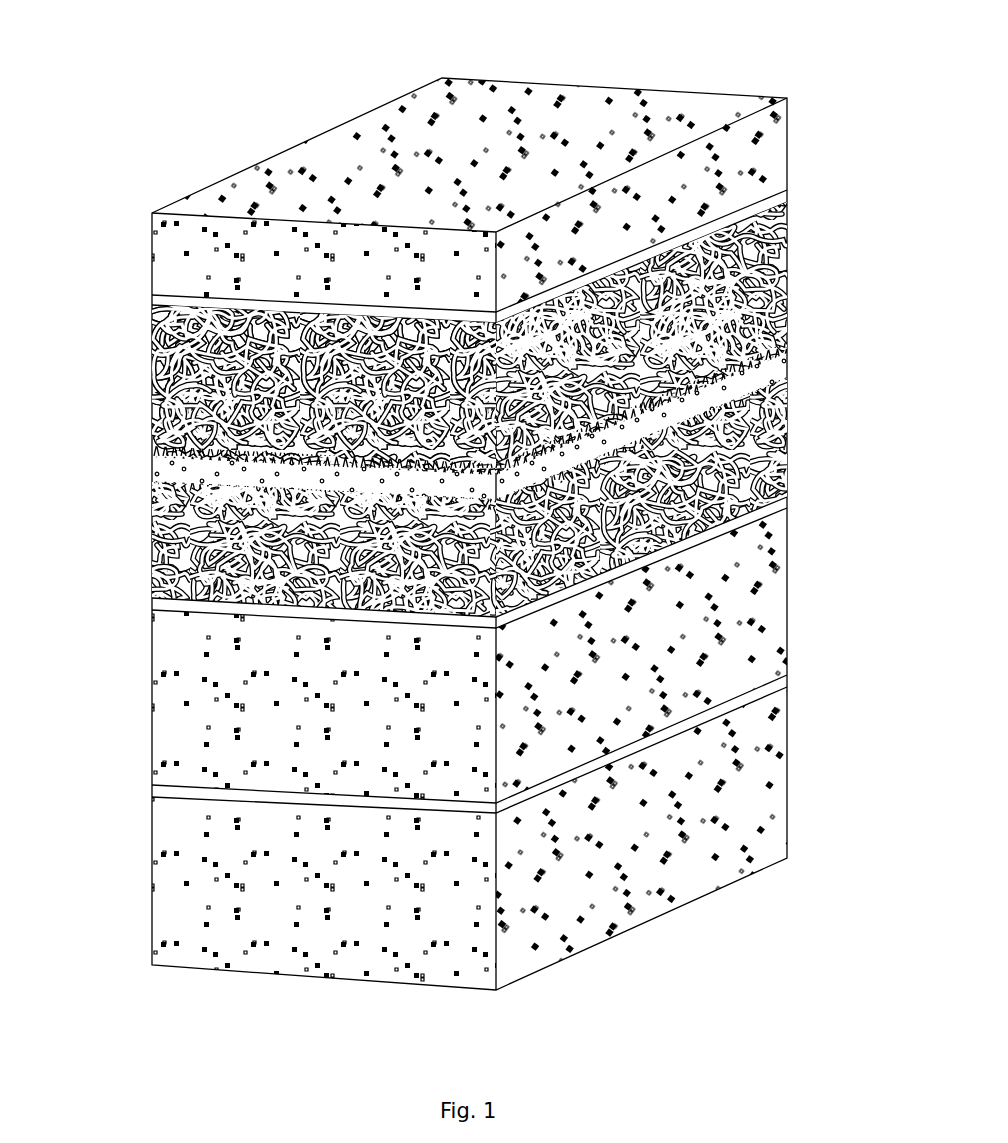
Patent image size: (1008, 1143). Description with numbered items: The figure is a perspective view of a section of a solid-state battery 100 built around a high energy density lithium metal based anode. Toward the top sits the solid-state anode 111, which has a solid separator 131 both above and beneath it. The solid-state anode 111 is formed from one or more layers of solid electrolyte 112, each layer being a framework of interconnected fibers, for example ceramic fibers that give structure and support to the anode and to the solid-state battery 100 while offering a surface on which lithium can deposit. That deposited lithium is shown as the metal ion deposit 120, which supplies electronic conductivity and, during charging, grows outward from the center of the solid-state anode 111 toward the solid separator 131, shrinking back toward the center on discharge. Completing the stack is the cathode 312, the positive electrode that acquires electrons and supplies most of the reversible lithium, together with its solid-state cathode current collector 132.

The solid-state battery 100 is at (280, 78).
The solid-state anode 111 is at (797, 278).
The solid electrolyte 112 is at (165, 345).
The metal ion deposit 120 is at (165, 458).
The solid separator 131 is at (788, 495).
The solid-state cathode current collector 132 is at (788, 677).
The cathode 312 is at (135, 755).